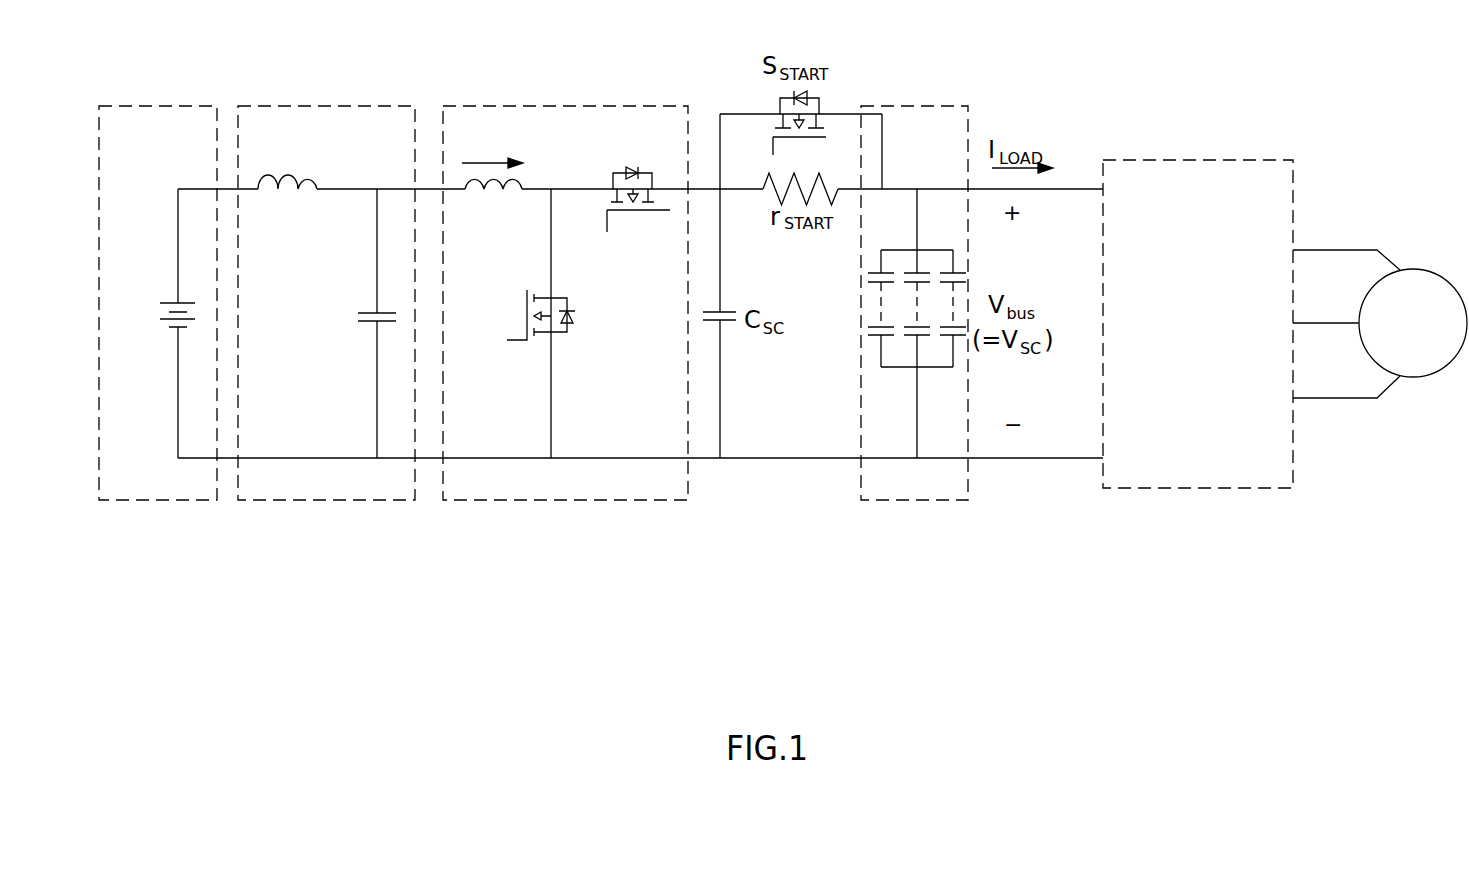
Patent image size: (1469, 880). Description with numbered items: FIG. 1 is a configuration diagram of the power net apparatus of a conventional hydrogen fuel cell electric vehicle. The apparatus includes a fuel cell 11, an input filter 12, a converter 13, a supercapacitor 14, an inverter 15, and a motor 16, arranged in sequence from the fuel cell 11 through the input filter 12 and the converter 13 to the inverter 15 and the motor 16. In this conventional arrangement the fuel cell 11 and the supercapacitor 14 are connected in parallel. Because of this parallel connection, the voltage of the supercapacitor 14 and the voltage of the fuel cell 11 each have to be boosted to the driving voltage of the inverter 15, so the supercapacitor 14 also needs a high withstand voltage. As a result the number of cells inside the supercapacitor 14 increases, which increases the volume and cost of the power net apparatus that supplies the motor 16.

The fuel cell 11 is at (158, 106).
The input filter 12 is at (327, 106).
The converter 13 is at (566, 106).
The supercapacitor 14 is at (912, 106).
The inverter 15 is at (1198, 160).
The motor 16 is at (1412, 270).